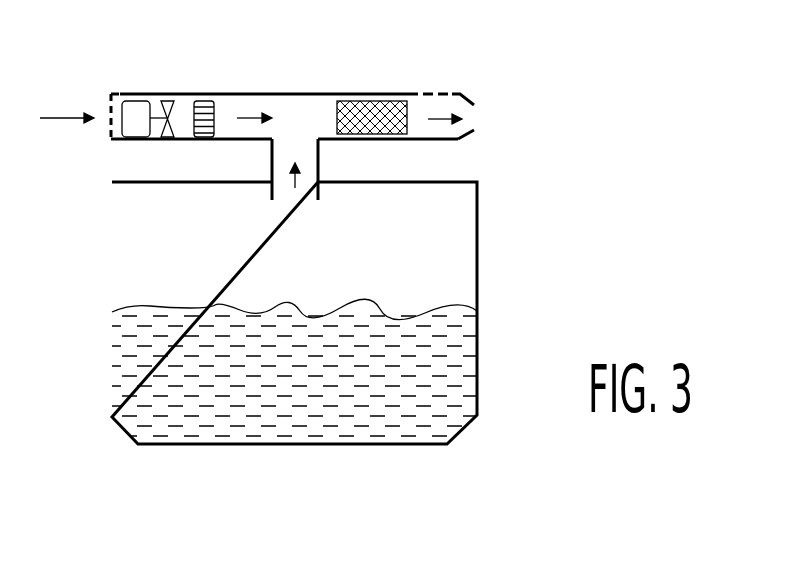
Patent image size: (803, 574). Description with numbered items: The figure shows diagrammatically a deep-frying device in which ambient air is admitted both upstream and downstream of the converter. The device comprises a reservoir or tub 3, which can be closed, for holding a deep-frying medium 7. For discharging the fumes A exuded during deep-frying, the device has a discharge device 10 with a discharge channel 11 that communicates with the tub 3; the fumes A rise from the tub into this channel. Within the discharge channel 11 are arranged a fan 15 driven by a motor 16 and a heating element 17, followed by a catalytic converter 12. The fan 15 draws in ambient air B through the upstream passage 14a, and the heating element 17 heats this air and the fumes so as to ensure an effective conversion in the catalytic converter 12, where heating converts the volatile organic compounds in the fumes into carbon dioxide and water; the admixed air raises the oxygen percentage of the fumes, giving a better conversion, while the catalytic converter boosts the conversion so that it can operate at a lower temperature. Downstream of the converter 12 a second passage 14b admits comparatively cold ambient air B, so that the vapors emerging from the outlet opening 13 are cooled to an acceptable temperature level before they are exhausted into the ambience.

The tub 3 is at (478, 255).
The deep-frying medium 7 is at (425, 312).
The discharge device 10 is at (297, 74).
The discharge channel 11 is at (243, 93).
The converter 12 is at (373, 110).
The outlet opening 13 is at (473, 120).
The passage 14a is at (108, 108).
The passage 14b is at (452, 93).
The fan 15 is at (167, 102).
The motor 16 is at (138, 112).
The heating element 17 is at (202, 105).
The fumes A is at (293, 204).
The ambient air B is at (55, 120).